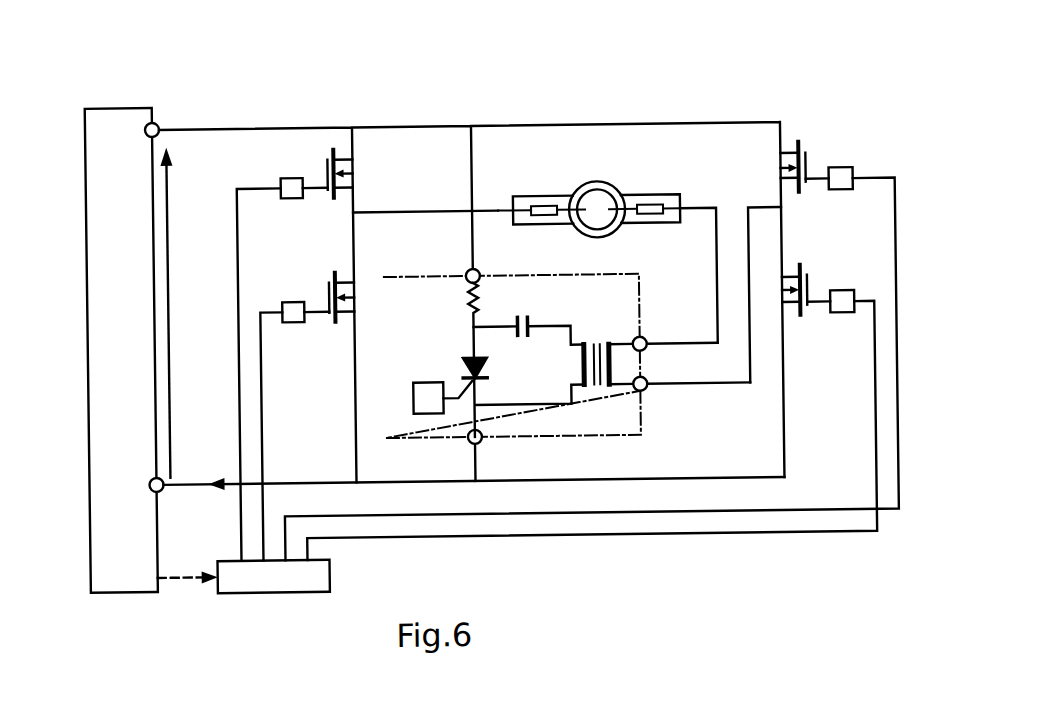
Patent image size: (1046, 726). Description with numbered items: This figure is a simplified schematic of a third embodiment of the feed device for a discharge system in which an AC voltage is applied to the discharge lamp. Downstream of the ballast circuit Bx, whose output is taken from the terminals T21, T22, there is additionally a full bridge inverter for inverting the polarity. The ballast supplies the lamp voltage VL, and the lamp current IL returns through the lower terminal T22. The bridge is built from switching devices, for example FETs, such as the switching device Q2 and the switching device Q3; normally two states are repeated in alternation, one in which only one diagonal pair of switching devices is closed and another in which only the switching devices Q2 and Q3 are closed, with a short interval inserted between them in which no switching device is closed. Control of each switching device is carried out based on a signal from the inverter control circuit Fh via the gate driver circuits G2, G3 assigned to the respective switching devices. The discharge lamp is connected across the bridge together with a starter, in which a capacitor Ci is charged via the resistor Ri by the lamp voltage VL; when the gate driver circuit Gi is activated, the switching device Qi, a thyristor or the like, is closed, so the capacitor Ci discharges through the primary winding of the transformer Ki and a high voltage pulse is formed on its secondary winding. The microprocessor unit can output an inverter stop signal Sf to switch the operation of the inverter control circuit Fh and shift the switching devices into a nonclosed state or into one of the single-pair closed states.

The ballast circuit Bx is at (85, 490).
The ballast output terminal T21 is at (158, 126).
The ballast output terminal T22 is at (157, 491).
The lamp voltage VL is at (183, 312).
The lamp current IL is at (473, 467).
The switching device Q2 is at (326, 284).
The switching device Q3 is at (806, 161).
The gate driver circuit G2 is at (290, 324).
The gate driver circuit G3 is at (840, 198).
The resistor Ri is at (467, 306).
The capacitor Ci is at (528, 323).
The transformer Ki is at (592, 350).
The switching device Qi is at (487, 373).
The gate driver circuit Gi is at (426, 386).
The inverter control circuit Fh is at (325, 578).
The inverter stop signal Sf is at (187, 584).